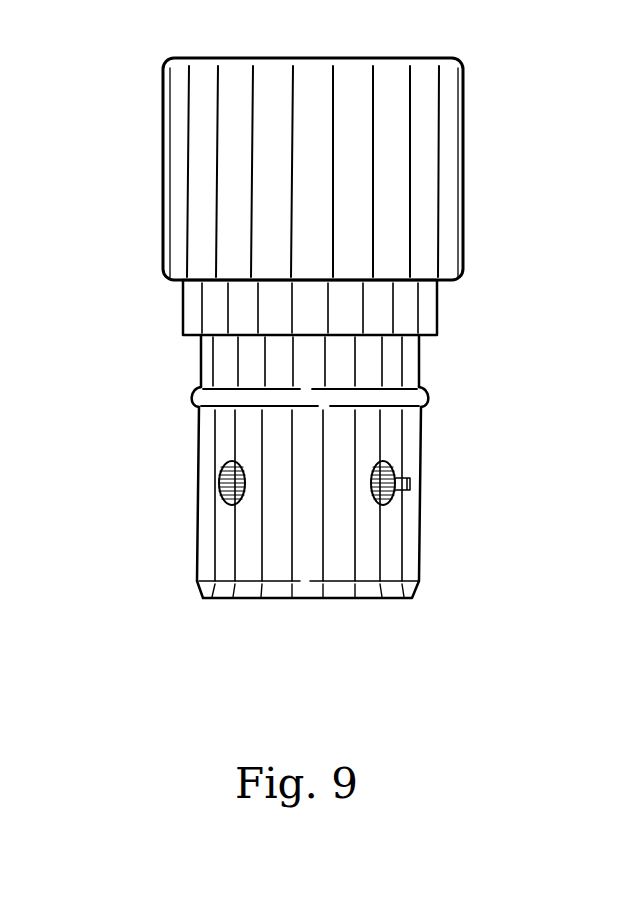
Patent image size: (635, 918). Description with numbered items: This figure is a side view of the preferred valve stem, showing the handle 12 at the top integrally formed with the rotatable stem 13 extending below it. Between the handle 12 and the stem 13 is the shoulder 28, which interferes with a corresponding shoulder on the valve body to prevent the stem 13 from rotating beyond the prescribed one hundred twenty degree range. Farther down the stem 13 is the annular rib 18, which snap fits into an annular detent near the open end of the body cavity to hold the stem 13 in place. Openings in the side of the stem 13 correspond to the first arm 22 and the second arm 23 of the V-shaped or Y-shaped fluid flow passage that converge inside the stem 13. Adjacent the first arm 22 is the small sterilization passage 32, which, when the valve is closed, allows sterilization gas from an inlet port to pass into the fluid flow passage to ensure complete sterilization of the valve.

The handle 12 is at (474, 139).
The rotatable stem 13 is at (176, 427).
The annular rib 18 is at (428, 397).
The first arm 22 is at (395, 497).
The second arm 23 is at (226, 502).
The shoulder 28 is at (433, 300).
The sterilization passage 32 is at (411, 483).